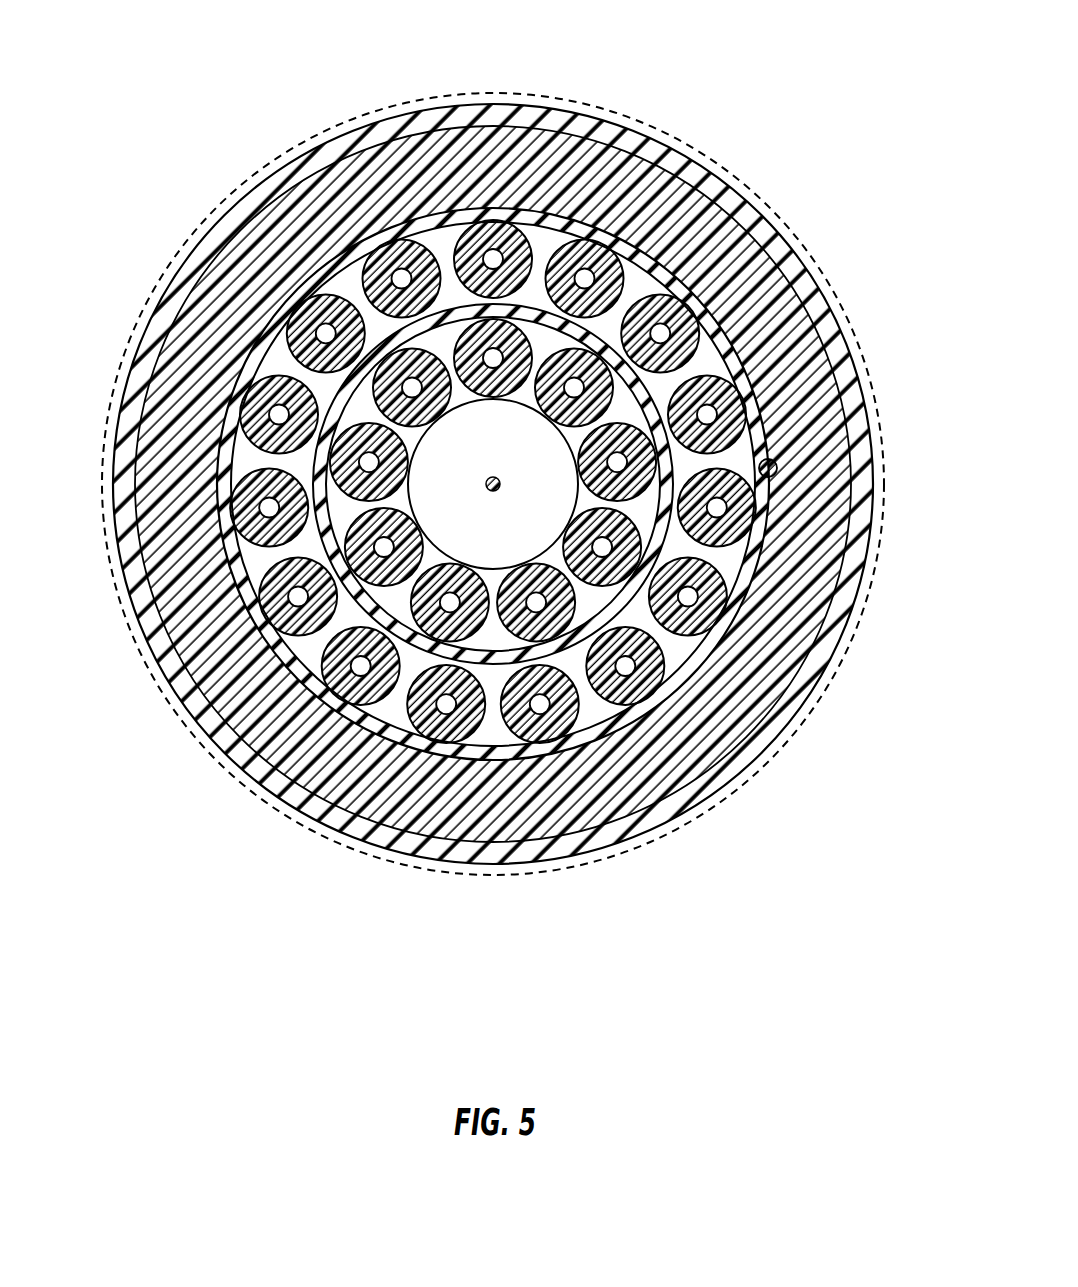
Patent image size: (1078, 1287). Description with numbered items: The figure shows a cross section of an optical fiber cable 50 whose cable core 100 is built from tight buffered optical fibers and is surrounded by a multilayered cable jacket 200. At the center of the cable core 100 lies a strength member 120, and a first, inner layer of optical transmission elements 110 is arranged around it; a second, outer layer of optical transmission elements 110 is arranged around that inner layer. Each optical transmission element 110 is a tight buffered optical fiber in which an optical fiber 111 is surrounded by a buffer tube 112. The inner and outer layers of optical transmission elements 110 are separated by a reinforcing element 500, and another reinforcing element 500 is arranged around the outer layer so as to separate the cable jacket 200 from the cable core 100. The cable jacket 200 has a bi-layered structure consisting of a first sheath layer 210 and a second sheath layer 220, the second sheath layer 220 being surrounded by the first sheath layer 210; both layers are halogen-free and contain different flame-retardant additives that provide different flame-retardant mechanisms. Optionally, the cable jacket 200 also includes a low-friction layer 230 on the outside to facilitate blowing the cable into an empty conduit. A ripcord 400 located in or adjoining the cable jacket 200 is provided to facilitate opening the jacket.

The optical fiber cable 50 is at (763, 96).
The cable core 100 is at (494, 572).
The optical transmission element 110 is at (674, 648).
The optical fiber 111 is at (694, 606).
The buffer tube 112 is at (678, 642).
The strength member 120 is at (446, 534).
The cable jacket 200 is at (291, 138).
The first sheath layer 210 is at (763, 213).
The second sheath layer 220 is at (778, 333).
The low-friction layer 230 is at (562, 97).
The ripcord 400 is at (778, 465).
The reinforcing element 500 is at (490, 520).